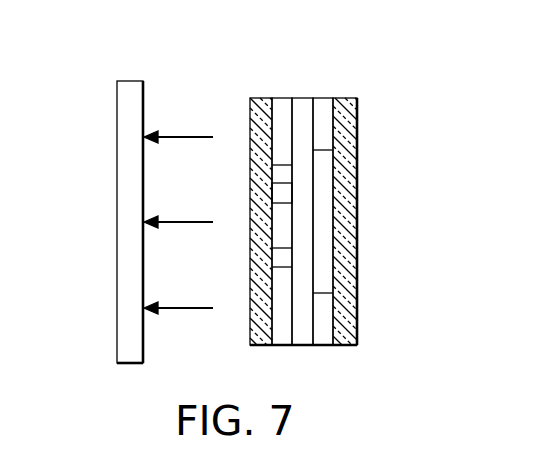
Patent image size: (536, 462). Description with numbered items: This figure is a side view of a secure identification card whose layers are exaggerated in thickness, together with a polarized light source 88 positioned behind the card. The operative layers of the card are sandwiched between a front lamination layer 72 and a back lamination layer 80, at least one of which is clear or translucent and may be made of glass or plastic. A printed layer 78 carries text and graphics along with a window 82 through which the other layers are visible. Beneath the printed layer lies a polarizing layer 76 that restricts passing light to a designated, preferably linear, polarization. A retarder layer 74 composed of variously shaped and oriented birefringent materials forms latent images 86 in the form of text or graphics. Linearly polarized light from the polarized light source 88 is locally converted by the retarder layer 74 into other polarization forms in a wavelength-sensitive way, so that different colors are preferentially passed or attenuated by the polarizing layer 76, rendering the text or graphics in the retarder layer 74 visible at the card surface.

The front lamination layer 72 is at (262, 98).
The retarder layer 74 is at (283, 340).
The polarizing layer 76 is at (302, 98).
The printed layer 78 is at (322, 340).
The back lamination layer 80 is at (348, 98).
The window 82 is at (325, 293).
The latent images 86 is at (280, 203).
The polarized light source 88 is at (130, 81).